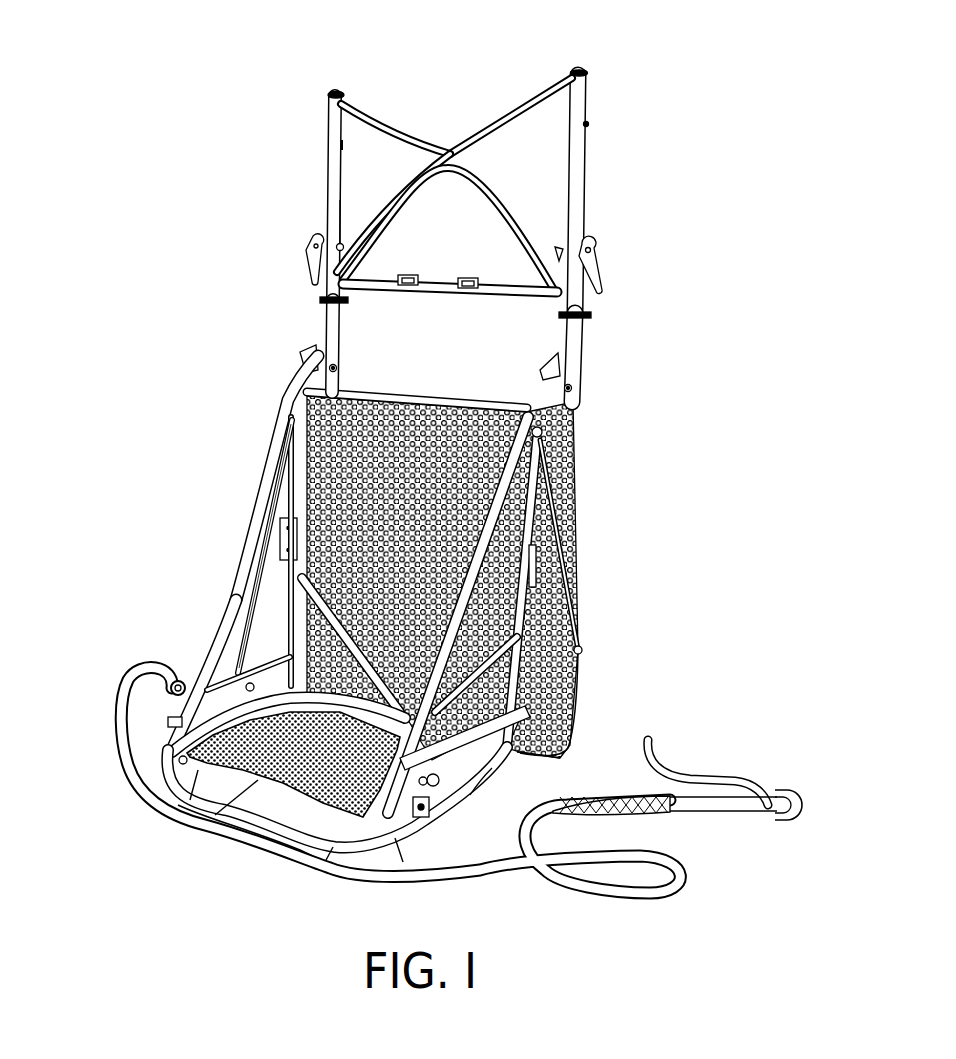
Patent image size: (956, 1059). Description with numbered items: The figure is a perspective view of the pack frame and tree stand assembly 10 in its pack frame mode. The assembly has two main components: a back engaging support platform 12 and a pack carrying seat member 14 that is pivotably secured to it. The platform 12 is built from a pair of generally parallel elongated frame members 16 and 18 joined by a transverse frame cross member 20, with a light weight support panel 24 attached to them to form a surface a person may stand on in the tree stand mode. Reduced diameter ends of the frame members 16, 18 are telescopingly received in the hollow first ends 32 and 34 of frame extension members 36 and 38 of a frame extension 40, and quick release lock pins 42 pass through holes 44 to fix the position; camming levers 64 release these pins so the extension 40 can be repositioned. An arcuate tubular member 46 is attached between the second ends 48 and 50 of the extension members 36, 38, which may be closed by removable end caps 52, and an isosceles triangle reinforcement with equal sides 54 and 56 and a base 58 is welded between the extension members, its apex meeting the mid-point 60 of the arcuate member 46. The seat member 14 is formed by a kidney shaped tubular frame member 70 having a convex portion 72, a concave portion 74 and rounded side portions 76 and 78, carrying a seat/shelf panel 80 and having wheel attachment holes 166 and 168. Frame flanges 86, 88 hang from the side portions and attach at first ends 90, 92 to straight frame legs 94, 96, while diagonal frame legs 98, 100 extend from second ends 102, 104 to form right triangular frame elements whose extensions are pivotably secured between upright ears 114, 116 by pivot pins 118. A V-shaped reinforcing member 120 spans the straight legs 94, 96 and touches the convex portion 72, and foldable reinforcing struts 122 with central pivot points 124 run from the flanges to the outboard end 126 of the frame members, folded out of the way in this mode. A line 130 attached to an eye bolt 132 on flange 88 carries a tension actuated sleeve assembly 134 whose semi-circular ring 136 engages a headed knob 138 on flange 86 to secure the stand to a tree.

The pack frame and tree stand assembly 10 is at (148, 157).
The back engaging support platform 12 is at (592, 352).
The pack carrying seat member 14 is at (215, 555).
The elongated frame member 16 is at (582, 335).
The elongated frame member 18 is at (340, 322).
The transverse frame cross member 20 is at (440, 400).
The support panel 24 is at (282, 423).
The hollow first end of frame extension member 32 is at (588, 300).
The hollow first end of frame extension member 34 is at (320, 292).
The frame extension member 36 is at (584, 201).
The frame extension member 38 is at (328, 197).
The back engaging support platform frame extension 40 is at (525, 158).
The quick release lock pin 42 is at (342, 240).
The hole 44 is at (339, 146).
The arcuate tubular member 46 is at (508, 118).
The second end of frame extension member 48 is at (588, 78).
The second end of frame extension member 50 is at (328, 98).
The removable end cap 52 is at (336, 91).
The triangle side 54 is at (508, 205).
The triangle side 56 is at (392, 200).
The triangle base 58 is at (498, 283).
The mid-point of arcuate tubular member 60 is at (445, 142).
The camming lever 64 is at (306, 270).
The kidney shaped tubular frame member 70 is at (472, 803).
The convex portion 72 is at (225, 684).
The concave portion 74 is at (225, 815).
The rounded side portion 76 is at (427, 818).
The rounded side portion 78 is at (195, 800).
The seat/shelf panel 80 is at (327, 850).
The frame flange 86 is at (485, 773).
The frame flange 88 is at (220, 670).
The first end of frame flange 90 is at (525, 742).
The first end of frame flange 92 is at (268, 662).
The straight frame leg 94 is at (537, 650).
The straight frame leg 96 is at (299, 603).
The diagonal frame leg 98 is at (462, 613).
The diagonal frame leg 100 is at (274, 453).
The second end of frame flange 102 is at (392, 822).
The second end of frame flange 104 is at (168, 722).
The upright ear 114 is at (303, 352).
The upright ear 116 is at (335, 365).
The pivot pin 118 is at (342, 372).
The V-shaped reinforcing member 120 is at (396, 679).
The foldable reinforcing strut 122 is at (556, 535).
The central pivot point 124 is at (545, 433).
The lower or outboard end of elongated frame member 126 is at (575, 695).
The elongated rope or line 130 is at (277, 840).
The eye bolt 132 is at (143, 682).
The sleeve assembly 134 is at (597, 798).
The semi-circular ring 136 is at (795, 793).
The headed knob 138 is at (437, 790).
The wheel attachment hole 166 is at (399, 840).
The wheel attachment hole 168 is at (178, 762).